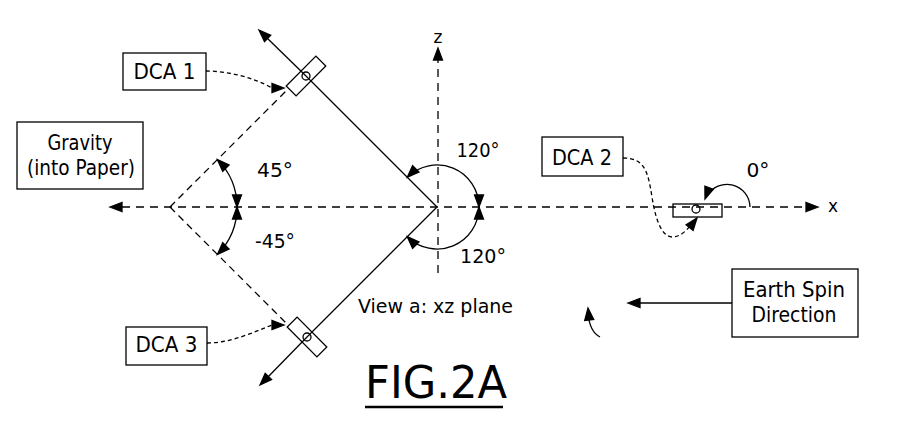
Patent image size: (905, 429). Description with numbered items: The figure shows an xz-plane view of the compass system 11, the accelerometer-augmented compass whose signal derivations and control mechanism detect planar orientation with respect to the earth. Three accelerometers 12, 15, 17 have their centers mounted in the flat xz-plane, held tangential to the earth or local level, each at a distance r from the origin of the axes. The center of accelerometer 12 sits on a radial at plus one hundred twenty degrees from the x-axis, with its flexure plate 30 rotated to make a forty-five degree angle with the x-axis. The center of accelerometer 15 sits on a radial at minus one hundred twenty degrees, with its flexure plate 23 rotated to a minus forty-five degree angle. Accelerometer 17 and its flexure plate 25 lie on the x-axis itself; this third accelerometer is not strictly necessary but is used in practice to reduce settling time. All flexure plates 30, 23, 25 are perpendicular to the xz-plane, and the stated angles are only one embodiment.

The compass system 11 is at (611, 334).
The accelerometer 12 is at (323, 66).
The flexure plate 30 is at (304, 71).
The accelerometer 15 is at (316, 357).
The flexure plate 23 is at (310, 332).
The accelerometer 17 is at (707, 218).
The flexure plate 25 is at (695, 205).